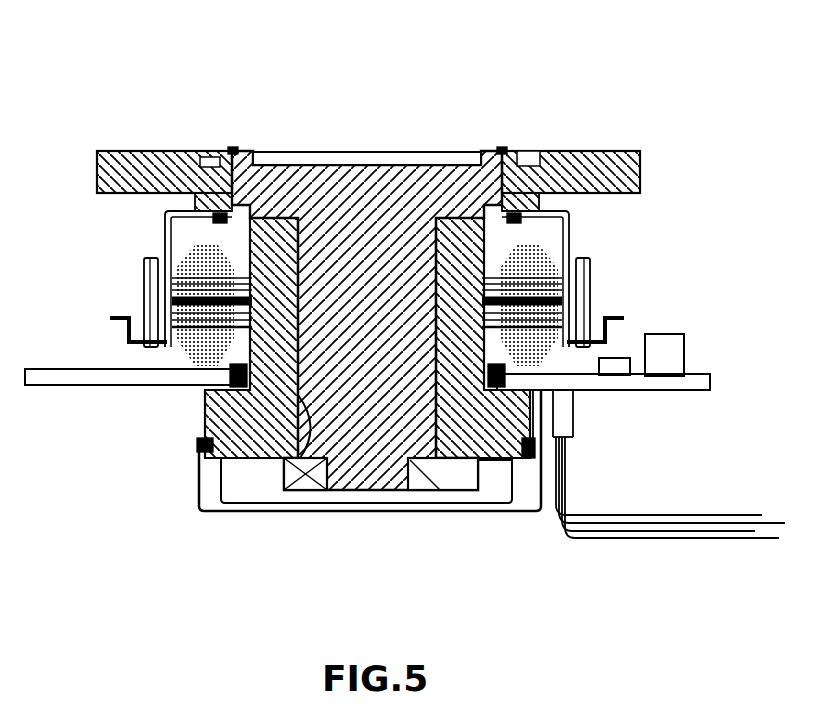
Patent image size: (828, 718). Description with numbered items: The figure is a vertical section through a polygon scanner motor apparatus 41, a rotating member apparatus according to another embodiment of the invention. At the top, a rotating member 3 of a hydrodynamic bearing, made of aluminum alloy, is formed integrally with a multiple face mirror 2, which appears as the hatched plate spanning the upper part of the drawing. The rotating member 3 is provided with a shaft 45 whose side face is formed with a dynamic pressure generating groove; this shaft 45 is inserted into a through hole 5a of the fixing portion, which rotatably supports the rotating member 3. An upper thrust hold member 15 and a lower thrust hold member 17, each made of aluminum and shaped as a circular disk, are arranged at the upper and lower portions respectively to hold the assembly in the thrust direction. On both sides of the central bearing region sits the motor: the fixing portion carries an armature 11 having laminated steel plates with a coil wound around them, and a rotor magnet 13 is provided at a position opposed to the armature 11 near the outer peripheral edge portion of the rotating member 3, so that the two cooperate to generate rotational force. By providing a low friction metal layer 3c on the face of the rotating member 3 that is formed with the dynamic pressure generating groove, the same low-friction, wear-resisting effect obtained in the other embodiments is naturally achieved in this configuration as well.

The polygon scanner motor apparatus 41 is at (84, 107).
The multiple face mirror 2 is at (636, 152).
The upper thrust hold member 15 is at (272, 200).
The rotating member 3 is at (473, 168).
The low friction metal layer 3c is at (145, 262).
The armature 11 is at (200, 360).
The rotor magnet 13 is at (165, 345).
The shaft 45 is at (350, 452).
The lower thrust hold member 17 is at (455, 490).
The through hole 5a is at (268, 505).